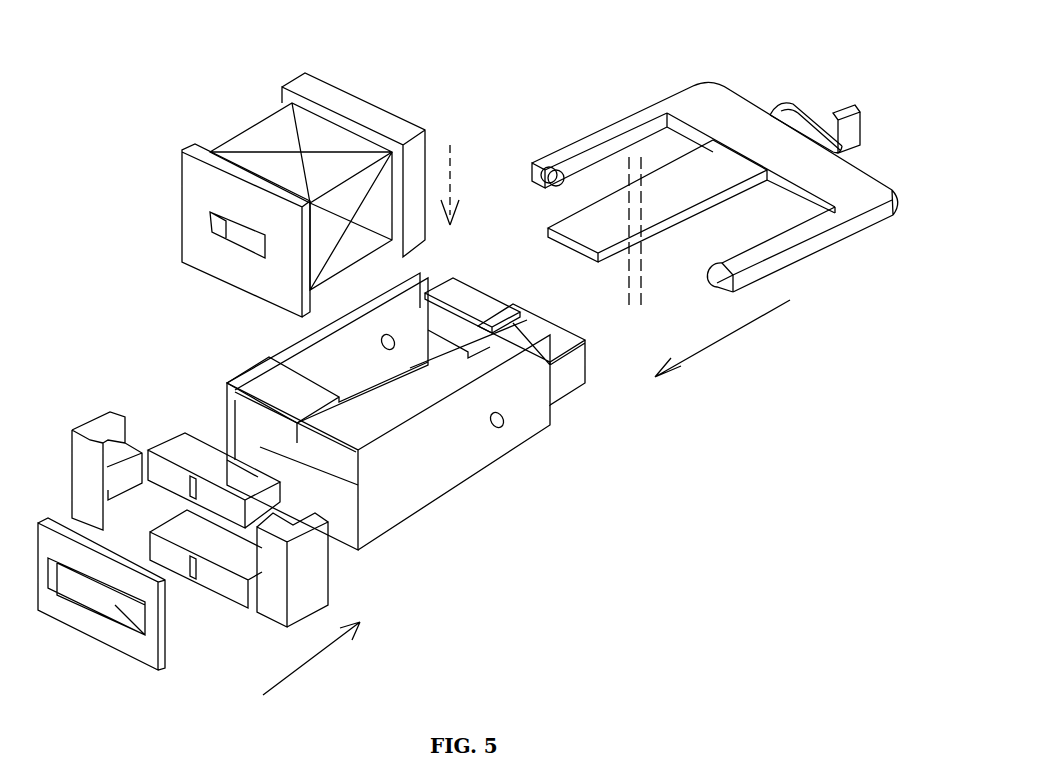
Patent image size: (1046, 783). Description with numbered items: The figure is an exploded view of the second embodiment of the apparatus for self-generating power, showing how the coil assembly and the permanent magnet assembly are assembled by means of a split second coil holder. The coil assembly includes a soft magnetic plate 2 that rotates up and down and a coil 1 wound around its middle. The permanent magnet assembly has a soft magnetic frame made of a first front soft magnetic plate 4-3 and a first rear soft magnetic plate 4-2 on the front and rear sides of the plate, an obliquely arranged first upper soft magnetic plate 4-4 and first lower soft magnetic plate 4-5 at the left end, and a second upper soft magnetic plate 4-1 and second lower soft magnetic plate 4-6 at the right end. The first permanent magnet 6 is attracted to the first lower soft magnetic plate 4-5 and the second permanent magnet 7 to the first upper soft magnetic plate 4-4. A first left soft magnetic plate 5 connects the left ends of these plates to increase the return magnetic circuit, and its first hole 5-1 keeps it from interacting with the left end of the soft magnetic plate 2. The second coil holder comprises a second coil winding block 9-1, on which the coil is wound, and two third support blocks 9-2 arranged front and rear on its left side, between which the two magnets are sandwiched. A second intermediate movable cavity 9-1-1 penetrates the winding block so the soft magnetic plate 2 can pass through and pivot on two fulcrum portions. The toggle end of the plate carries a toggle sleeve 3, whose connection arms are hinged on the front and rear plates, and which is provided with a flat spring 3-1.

The coil 1 is at (267, 140).
The soft magnetic plate 2 is at (698, 182).
The toggle sleeve 3 is at (697, 110).
The flat spring 3-1 is at (822, 115).
The second upper soft magnetic plate 4-1 is at (587, 383).
The first rear soft magnetic plate 4-2 is at (353, 367).
The first front soft magnetic plate 4-3 is at (443, 455).
The first upper soft magnetic plate 4-4 is at (343, 423).
The first lower soft magnetic plate 4-5 is at (390, 546).
The second lower soft magnetic plate 4-6 is at (520, 370).
The first left soft magnetic plate 5 is at (140, 577).
The first hole 5-1 is at (168, 647).
The first permanent magnet 6 is at (227, 553).
The second permanent magnet 7 is at (203, 460).
The second coil winding block 9-1 is at (307, 85).
The second intermediate movable cavity 9-1-1 is at (222, 222).
The third support block 9-2 is at (307, 553).